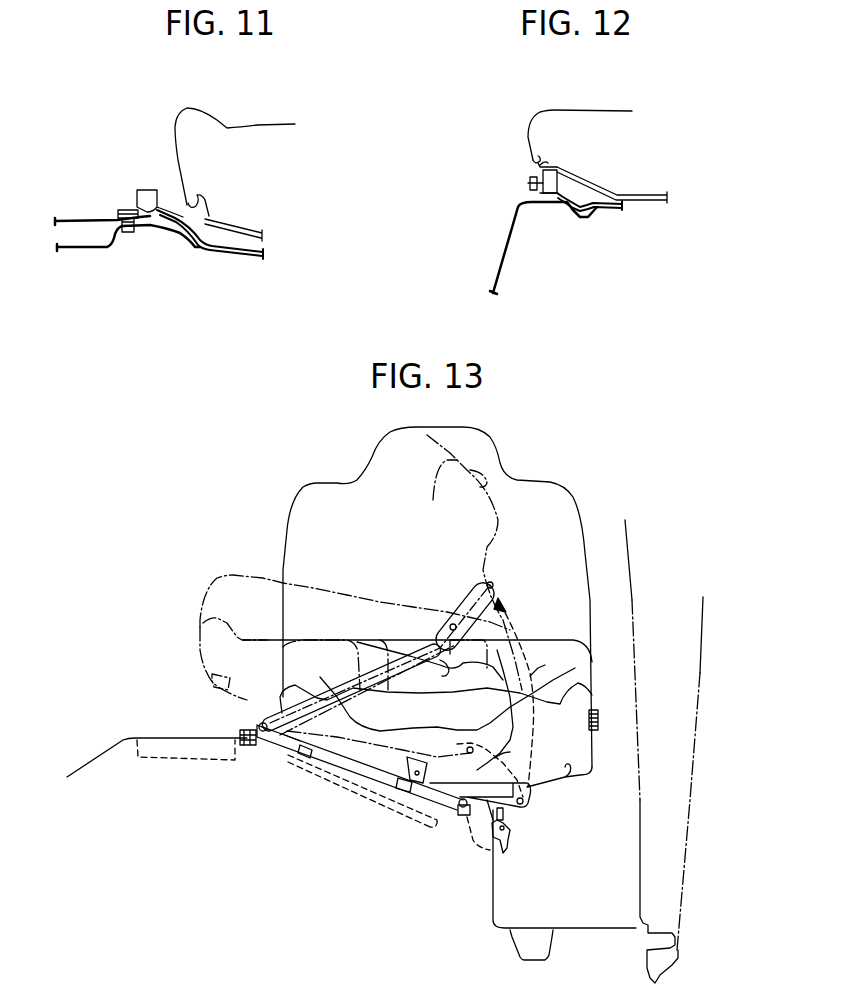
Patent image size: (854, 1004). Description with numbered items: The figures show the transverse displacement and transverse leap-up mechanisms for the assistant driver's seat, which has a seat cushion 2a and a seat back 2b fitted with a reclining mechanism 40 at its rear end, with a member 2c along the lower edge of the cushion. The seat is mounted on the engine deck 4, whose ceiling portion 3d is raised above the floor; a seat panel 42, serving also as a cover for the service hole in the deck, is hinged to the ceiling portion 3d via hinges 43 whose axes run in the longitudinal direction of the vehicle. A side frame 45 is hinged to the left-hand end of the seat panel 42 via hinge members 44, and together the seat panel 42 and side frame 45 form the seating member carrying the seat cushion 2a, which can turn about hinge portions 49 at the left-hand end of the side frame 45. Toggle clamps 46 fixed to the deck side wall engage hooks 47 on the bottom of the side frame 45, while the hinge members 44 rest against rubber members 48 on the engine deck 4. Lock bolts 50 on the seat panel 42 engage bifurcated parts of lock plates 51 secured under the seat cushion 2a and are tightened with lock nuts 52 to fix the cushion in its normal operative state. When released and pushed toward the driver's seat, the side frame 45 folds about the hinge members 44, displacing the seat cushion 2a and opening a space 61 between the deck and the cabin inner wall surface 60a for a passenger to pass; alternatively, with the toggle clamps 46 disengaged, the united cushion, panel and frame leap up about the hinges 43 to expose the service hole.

In FIG. 11, the seat cushion 2a is at (276, 128).
In FIG. 12, the seat cushion 2a is at (600, 118).
In FIG. 13, the seat cushion 2a is at (583, 703).
In FIG. 13, the seat back 2b is at (565, 500).
In FIG. 11, the seat cushion frame 2c is at (250, 225).
In FIG. 12, the seat cushion frame 2c is at (650, 195).
In FIG. 13, the seat cushion frame 2c is at (575, 774).
In FIG. 13, the ceiling portion 3d is at (155, 738).
In FIG. 11, the engine deck 4 is at (163, 231).
In FIG. 12, the engine deck 4 is at (505, 267).
In FIG. 13, the engine deck 4 is at (127, 735).
In FIG. 13, the reclining mechanism 40 is at (597, 728).
In FIG. 11, the seat panel 42 is at (238, 255).
In FIG. 12, the seat panel 42 is at (612, 206).
In FIG. 13, the seat panel 42 is at (375, 777).
In FIG. 11, the hinges 43 is at (138, 200).
In FIG. 13, the hinges 43 is at (248, 733).
In FIG. 13, the hinge members 44 is at (460, 808).
In FIG. 13, the side frame 45 is at (487, 802).
In FIG. 13, the toggle clamps 46 is at (513, 845).
In FIG. 13, the hooks 47 is at (505, 810).
In FIG. 13, the rubber members 48 is at (463, 820).
In FIG. 13, the hinge portions 49 is at (530, 800).
In FIG. 12, the lock bolts 50 is at (530, 184).
In FIG. 13, the lock bolts 50 is at (307, 753).
In FIG. 12, the lock plates 51 is at (540, 168).
In FIG. 13, the lock plates 51 is at (200, 661).
In FIG. 12, the lock nuts 52 is at (528, 195).
In FIG. 13, the lock nuts 52 is at (410, 803).
In FIG. 13, the inner wall surface 60a is at (645, 775).
In FIG. 13, the space 61 is at (606, 846).